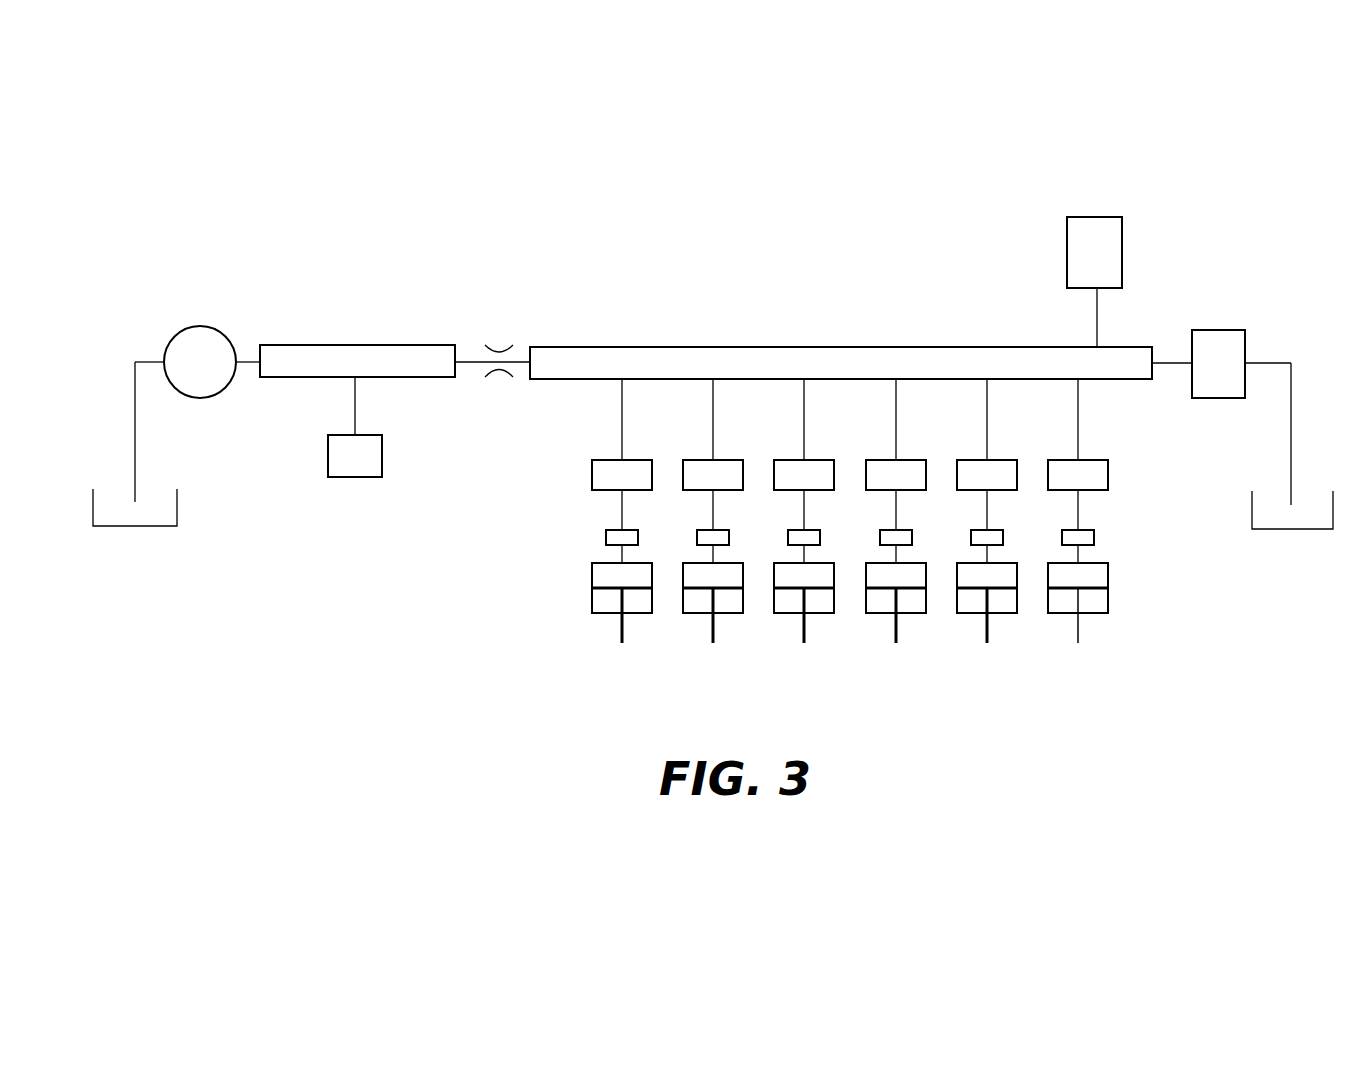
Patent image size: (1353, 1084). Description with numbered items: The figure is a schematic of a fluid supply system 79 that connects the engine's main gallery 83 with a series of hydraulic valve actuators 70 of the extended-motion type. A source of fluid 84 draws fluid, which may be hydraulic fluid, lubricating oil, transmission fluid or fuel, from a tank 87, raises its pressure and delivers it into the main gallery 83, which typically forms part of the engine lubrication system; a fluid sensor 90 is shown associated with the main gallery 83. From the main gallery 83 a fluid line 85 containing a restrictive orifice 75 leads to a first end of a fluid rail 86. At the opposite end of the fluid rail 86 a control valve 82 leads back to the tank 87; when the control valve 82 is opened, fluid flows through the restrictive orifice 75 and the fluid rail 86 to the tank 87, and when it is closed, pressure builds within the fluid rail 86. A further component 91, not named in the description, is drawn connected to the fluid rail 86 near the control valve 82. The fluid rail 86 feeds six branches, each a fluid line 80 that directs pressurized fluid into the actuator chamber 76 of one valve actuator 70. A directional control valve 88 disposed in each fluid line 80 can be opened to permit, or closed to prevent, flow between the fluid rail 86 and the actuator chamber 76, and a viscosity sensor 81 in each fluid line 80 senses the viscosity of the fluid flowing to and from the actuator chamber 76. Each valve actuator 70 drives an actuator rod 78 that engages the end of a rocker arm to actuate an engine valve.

The valve actuator 70 is at (546, 587).
The restrictive orifice 75 is at (503, 373).
The actuator chamber 76 is at (599, 578).
The actuator rod 78 is at (618, 632).
The fluid supply system 79 is at (623, 250).
The fluid line 80 is at (621, 510).
The viscosity sensor 81 is at (606, 540).
The control valve 82 is at (1217, 330).
The main gallery 83 is at (338, 345).
The source of fluid 84 is at (198, 327).
The fluid line 85 is at (468, 355).
The fluid rail 86 is at (800, 347).
The tank 87 is at (135, 527).
The directional control valve 88 is at (592, 463).
The fluid sensor 90 is at (357, 478).
The pressure sensor 91 is at (1088, 217).